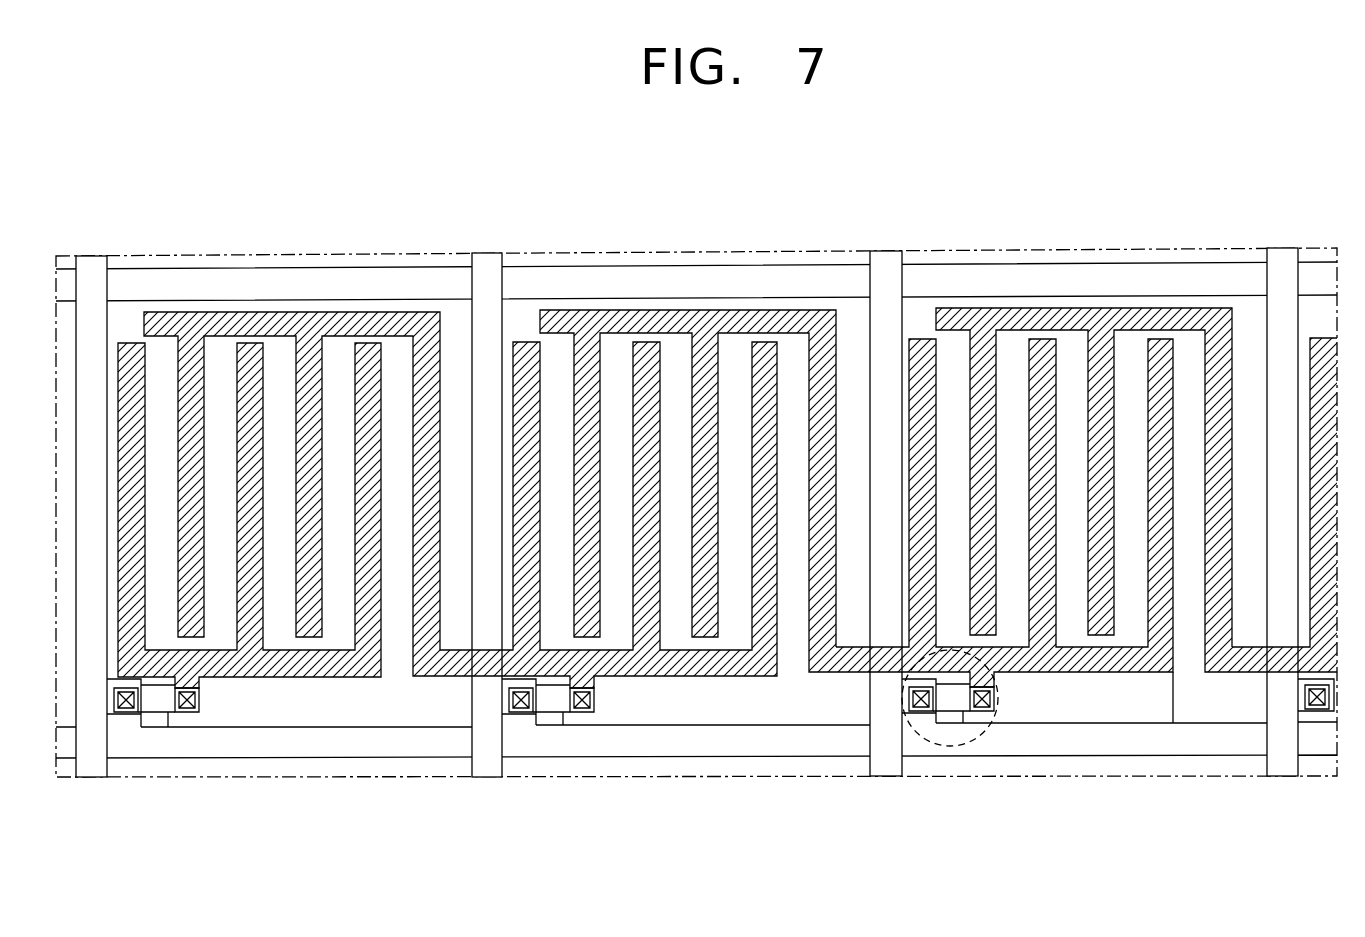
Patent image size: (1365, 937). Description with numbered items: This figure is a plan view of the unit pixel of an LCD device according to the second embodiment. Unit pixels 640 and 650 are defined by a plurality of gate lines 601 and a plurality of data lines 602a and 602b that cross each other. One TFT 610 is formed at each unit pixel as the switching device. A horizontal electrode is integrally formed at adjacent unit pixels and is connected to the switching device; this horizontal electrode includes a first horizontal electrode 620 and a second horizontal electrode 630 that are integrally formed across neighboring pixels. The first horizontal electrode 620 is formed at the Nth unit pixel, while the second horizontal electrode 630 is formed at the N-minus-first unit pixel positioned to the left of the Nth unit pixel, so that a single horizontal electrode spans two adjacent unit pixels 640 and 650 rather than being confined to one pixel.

The gate line 601 is at (1043, 745).
The data line 602a is at (486, 768).
The data line 602b is at (886, 768).
The TFT 610 is at (950, 746).
The first horizontal electrode 620 is at (718, 678).
The second horizontal electrode 630 is at (682, 312).
The unit pixel 640 is at (660, 707).
The unit pixel 650 is at (1168, 705).